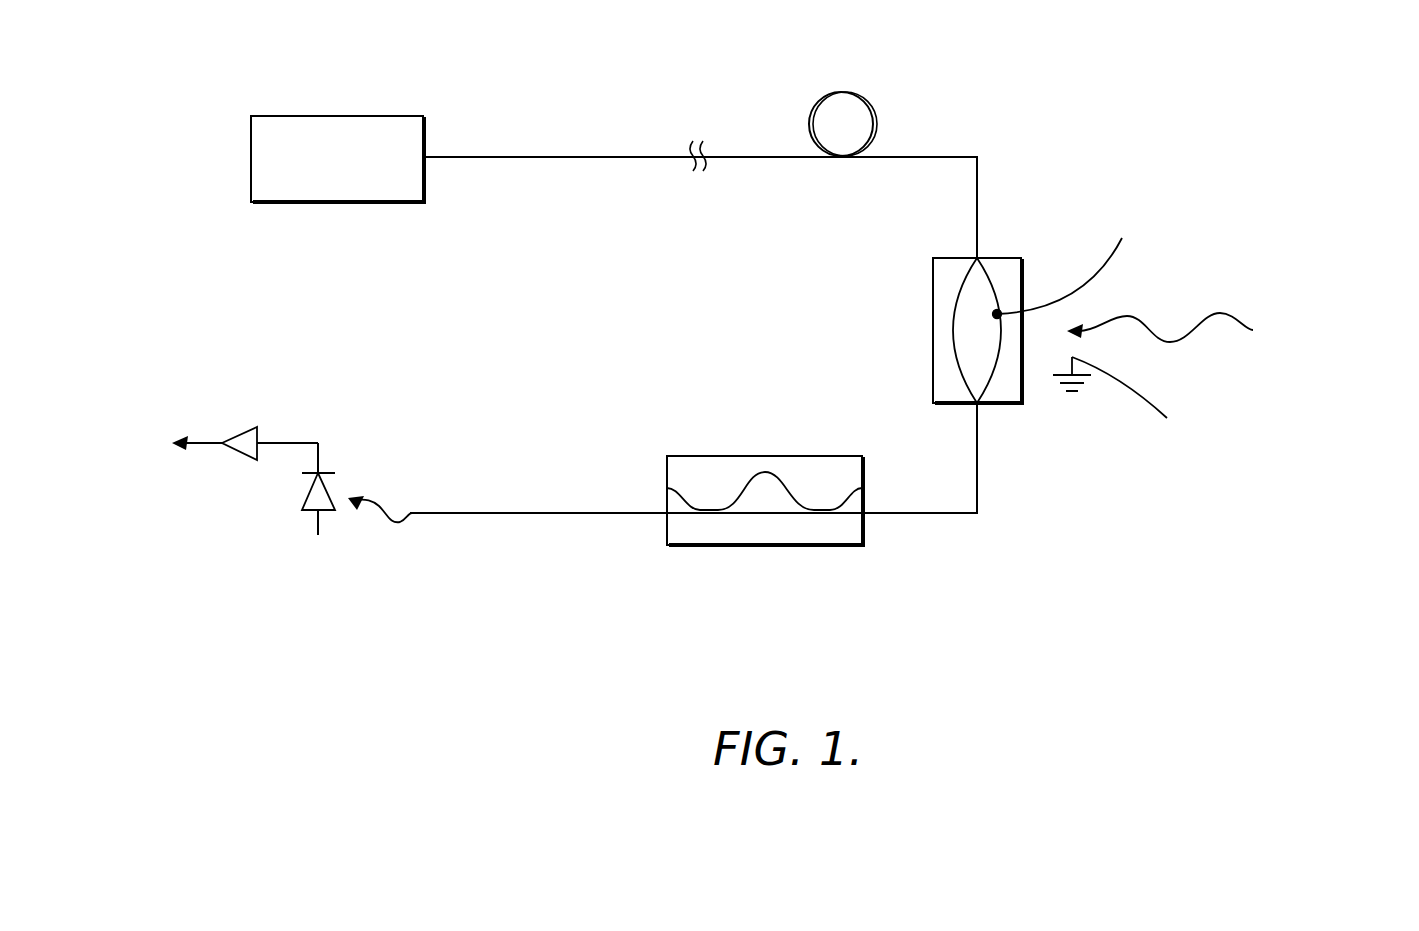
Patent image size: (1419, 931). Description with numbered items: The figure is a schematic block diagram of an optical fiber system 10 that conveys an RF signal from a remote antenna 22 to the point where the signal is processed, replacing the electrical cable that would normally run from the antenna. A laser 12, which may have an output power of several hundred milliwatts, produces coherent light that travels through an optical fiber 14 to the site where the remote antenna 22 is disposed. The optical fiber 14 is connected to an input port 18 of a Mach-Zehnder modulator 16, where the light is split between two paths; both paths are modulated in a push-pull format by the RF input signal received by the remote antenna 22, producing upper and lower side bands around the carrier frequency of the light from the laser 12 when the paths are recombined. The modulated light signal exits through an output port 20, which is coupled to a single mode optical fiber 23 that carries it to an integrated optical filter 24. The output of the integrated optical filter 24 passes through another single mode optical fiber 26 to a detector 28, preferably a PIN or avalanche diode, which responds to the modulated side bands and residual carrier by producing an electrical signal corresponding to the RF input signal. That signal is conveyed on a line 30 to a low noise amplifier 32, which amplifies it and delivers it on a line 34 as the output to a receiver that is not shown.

The optical fiber system 10 is at (500, 584).
The laser 12 is at (423, 133).
The optical fiber 14 is at (582, 157).
The Mach-Zehnder modulator 16 is at (933, 276).
The input port 18 is at (977, 258).
The output port 20 is at (977, 403).
The remote antenna 22 is at (1178, 391).
The single mode optical fiber 23 is at (925, 513).
The integrated optical filter 24 is at (667, 532).
The single mode optical fiber 26 is at (553, 513).
The detector 28 is at (307, 510).
The line 30 is at (318, 456).
The low noise amplifier 32 is at (258, 432).
The line 34 is at (200, 445).